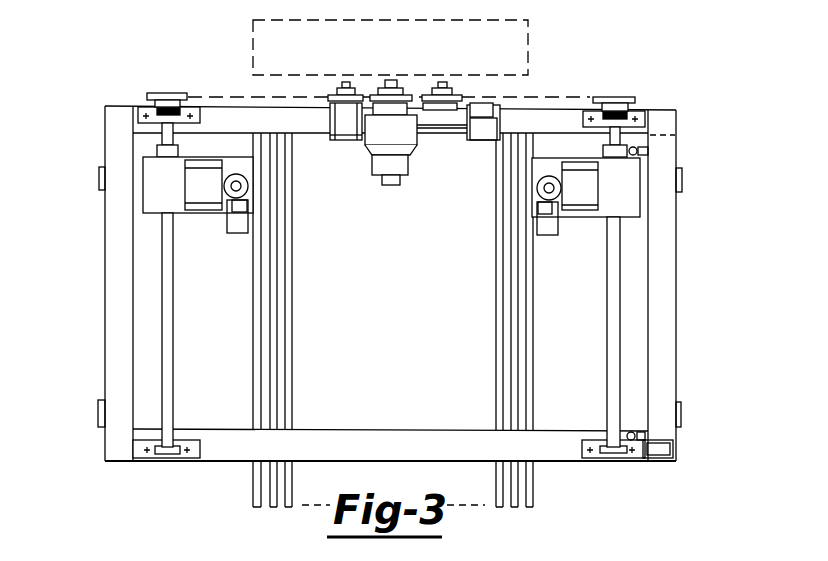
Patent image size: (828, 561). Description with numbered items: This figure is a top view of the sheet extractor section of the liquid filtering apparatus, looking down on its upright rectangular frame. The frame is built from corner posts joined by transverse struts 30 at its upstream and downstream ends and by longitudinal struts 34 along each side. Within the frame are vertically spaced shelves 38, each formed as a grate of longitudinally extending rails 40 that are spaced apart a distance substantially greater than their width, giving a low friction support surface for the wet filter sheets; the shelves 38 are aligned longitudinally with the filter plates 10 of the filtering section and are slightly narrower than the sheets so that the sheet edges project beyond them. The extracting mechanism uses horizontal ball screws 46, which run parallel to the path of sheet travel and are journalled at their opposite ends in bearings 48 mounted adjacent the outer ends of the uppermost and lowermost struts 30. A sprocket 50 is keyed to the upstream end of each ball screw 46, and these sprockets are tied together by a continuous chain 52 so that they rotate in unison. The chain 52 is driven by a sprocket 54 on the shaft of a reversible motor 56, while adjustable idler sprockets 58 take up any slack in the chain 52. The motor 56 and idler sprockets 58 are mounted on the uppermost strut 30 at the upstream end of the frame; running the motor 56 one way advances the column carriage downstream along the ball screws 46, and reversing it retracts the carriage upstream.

The plates 10 is at (533, 30).
The transverse struts 30 is at (217, 123).
The longitudinal struts 34 is at (108, 333).
The shelves 38 is at (515, 508).
The rails 40 is at (275, 337).
The ball screw 46 is at (170, 382).
The bearings 48 is at (147, 108).
The sprocket 50 is at (162, 93).
The chain 52 is at (542, 95).
The sprocket 54 is at (412, 97).
The reversible motor 56 is at (408, 170).
The idler sprockets 58 is at (347, 140).